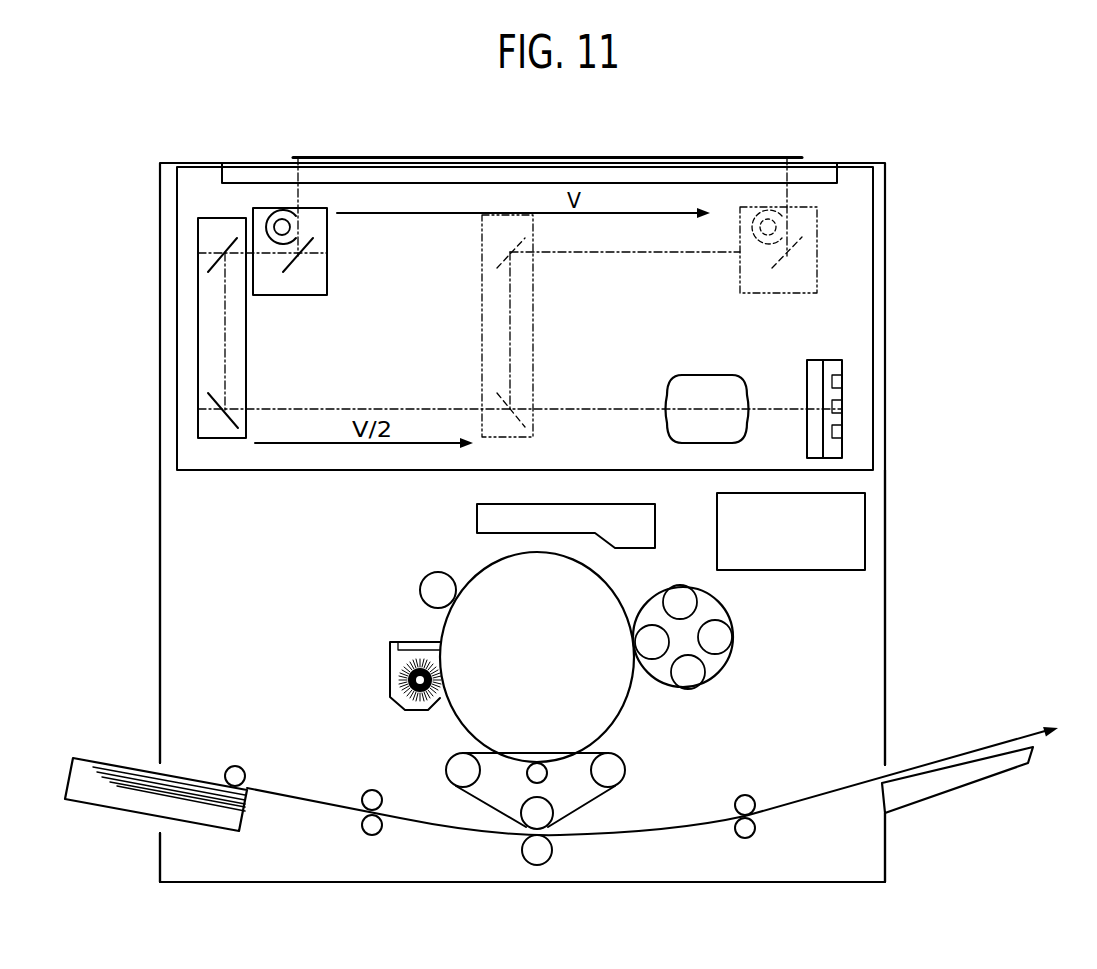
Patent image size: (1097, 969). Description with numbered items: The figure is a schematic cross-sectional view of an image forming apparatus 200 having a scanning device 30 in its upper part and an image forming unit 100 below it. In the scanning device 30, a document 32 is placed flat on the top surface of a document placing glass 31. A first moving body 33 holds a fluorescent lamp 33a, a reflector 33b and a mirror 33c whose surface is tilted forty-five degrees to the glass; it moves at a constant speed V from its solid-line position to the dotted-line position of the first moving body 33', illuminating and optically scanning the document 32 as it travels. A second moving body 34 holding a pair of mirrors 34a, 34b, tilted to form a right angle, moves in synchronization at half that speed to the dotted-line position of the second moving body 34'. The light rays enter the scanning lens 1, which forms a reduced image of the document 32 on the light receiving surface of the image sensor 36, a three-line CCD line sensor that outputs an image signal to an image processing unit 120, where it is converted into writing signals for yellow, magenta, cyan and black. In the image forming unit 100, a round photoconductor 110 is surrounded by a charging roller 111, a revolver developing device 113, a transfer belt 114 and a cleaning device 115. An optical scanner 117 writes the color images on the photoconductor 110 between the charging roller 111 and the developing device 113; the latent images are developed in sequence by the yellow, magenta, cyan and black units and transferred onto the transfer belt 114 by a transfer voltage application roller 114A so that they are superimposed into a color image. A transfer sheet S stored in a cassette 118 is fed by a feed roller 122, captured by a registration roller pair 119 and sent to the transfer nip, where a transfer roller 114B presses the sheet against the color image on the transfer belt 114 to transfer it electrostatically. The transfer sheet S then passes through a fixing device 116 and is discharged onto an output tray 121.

The image forming apparatus 200 is at (847, 125).
The scanning device 30 is at (873, 203).
The document placing glass 31 is at (250, 163).
The document 32 is at (354, 157).
The first moving body 33 is at (285, 230).
The fluorescent lamp 33a is at (298, 229).
The reflector 33b is at (260, 216).
The mirror 33c is at (313, 256).
The first moving body having moved 33' is at (778, 259).
The second moving body 34 is at (206, 328).
The mirror 34a is at (217, 258).
The mirror 34b is at (217, 412).
The second moving body having moved 34' is at (611, 326).
The scanning lens 1 is at (700, 375).
The image sensor 36 is at (830, 360).
The image forming unit 100 is at (885, 678).
The photoconductor 110 is at (619, 716).
The charging roller 111 is at (420, 588).
The revolver developing device 113 is at (725, 678).
The transfer belt 114 is at (564, 791).
The transfer voltage application roller 114A is at (537, 763).
The transfer roller 114B is at (552, 848).
The cleaning device 115 is at (390, 670).
The fixing device 116 is at (755, 834).
The optical scanner 117 is at (477, 518).
The cassette 118 is at (187, 823).
The registration roller pair 119 is at (363, 828).
The image processing unit 120 is at (818, 572).
The output tray 121 is at (953, 790).
The feed roller 122 is at (236, 766).
The transfer sheet S is at (133, 772).